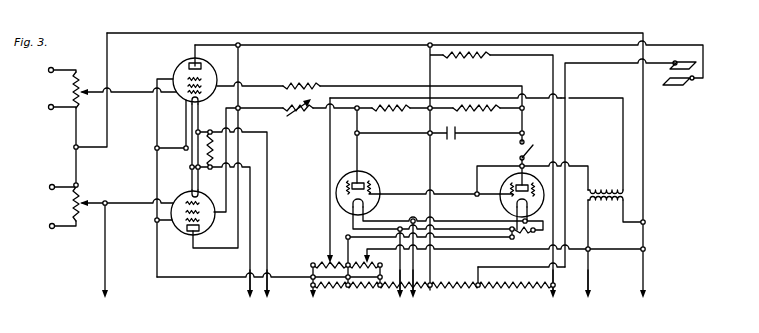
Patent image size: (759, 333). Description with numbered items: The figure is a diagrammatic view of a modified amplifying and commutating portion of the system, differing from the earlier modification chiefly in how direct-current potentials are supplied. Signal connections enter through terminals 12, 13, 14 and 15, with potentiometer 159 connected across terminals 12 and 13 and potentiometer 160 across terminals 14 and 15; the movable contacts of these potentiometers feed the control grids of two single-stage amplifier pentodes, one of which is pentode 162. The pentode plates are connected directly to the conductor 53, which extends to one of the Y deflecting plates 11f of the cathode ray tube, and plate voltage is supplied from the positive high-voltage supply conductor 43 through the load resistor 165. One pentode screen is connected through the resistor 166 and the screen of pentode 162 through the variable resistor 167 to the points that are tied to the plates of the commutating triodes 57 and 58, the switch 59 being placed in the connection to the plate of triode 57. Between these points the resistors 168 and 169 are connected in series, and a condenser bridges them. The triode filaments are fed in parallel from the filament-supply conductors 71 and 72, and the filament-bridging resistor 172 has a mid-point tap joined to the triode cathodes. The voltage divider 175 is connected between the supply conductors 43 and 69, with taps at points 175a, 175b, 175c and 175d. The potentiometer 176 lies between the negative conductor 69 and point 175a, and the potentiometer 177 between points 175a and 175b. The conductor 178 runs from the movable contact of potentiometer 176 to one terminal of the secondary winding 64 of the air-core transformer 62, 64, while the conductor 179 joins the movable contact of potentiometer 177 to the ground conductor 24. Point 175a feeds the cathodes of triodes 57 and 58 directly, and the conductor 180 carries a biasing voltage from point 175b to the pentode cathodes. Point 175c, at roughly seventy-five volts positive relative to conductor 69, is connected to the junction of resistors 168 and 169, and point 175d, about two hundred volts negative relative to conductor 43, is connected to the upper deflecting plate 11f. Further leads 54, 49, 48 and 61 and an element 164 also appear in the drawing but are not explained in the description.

The terminal 12 is at (48, 72).
The terminal 13 is at (48, 110).
The terminal 14 is at (50, 188).
The terminal 15 is at (50, 228).
The potentiometer 159 is at (63, 109).
The potentiometer 160 is at (72, 203).
The ground conductor 24 is at (110, 63).
The output conductor 54 is at (114, 320).
The variable resistor 167 is at (191, 60).
The resistor 166 is at (296, 84).
The load resistor 165 is at (460, 58).
The resistor 164 is at (214, 149).
The resistor 169 is at (391, 116).
The resistor 168 is at (476, 116).
The switch 59 is at (518, 147).
The conductor 53 is at (658, 46).
The deflecting plates 11f is at (673, 84).
The conductor 178 is at (330, 193).
The triode 58 is at (378, 184).
The triode 57 is at (504, 186).
The secondary winding 64 is at (612, 178).
The air-core transformer 62 is at (605, 212).
The pentode 162 is at (188, 236).
The potentiometer 176 is at (321, 262).
The potentiometer 177 is at (352, 262).
The voltage divider 175 is at (452, 292).
The point on voltage divider 175a is at (344, 288).
The point on voltage divider 175b is at (379, 290).
The point on voltage divider 175c is at (433, 294).
The point on voltage divider 175d is at (481, 290).
The filament-bridging resistor 172 is at (522, 238).
The conductor 179 is at (505, 261).
The conductor 180 is at (292, 268).
The output conductor 49 is at (258, 320).
The output conductor 48 is at (276, 320).
The negative direct-current supply conductor 69 is at (321, 320).
The filament-supply conductor 72 is at (407, 320).
The filament-supply conductor 71 is at (425, 320).
The high-voltage direct-current supply conductor 43 is at (561, 320).
The output conductor 61 is at (596, 320).